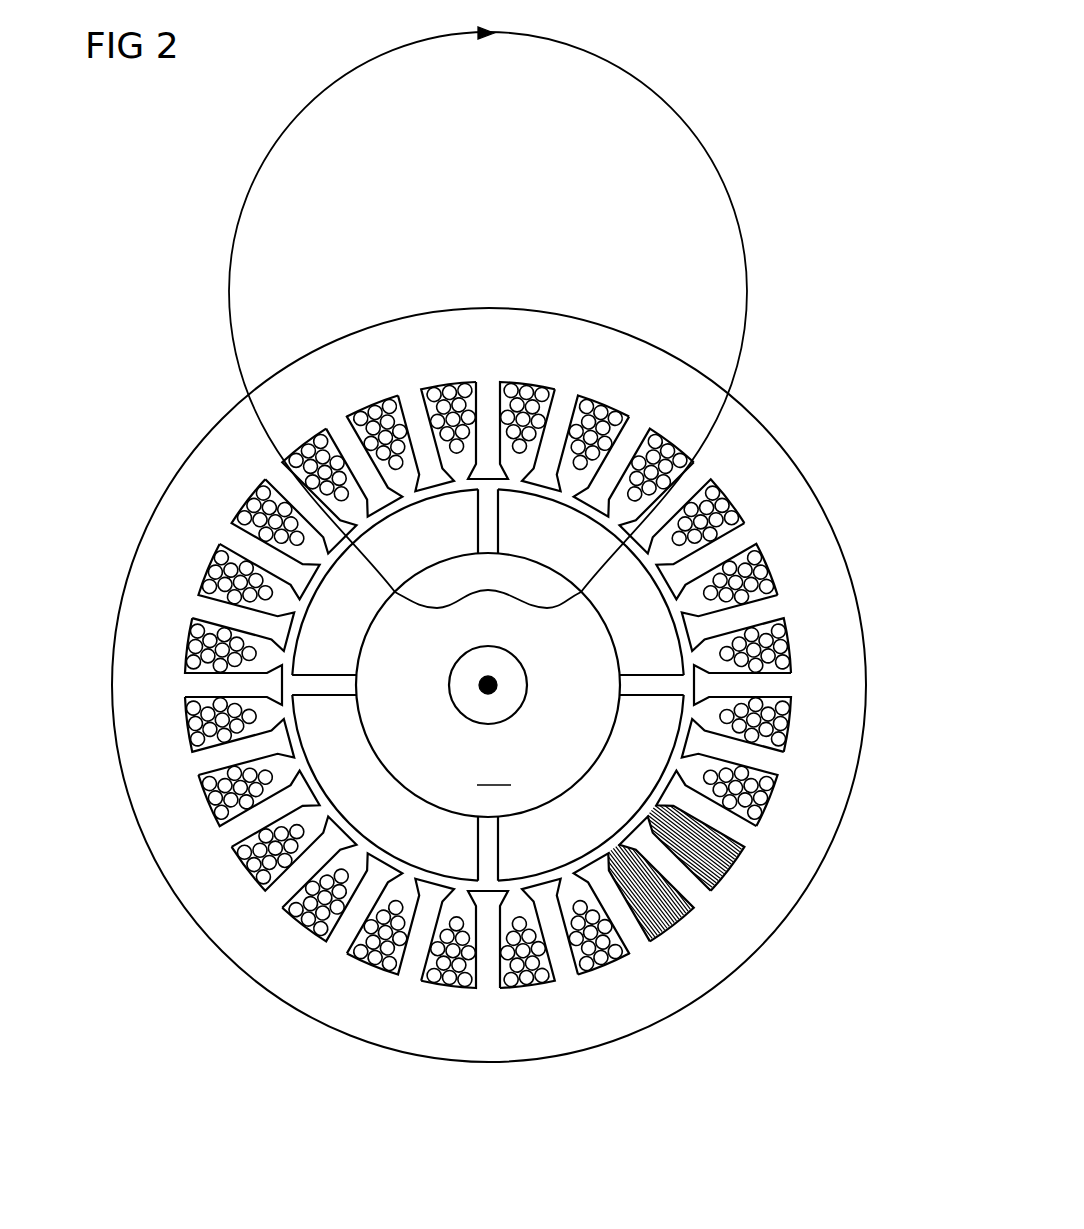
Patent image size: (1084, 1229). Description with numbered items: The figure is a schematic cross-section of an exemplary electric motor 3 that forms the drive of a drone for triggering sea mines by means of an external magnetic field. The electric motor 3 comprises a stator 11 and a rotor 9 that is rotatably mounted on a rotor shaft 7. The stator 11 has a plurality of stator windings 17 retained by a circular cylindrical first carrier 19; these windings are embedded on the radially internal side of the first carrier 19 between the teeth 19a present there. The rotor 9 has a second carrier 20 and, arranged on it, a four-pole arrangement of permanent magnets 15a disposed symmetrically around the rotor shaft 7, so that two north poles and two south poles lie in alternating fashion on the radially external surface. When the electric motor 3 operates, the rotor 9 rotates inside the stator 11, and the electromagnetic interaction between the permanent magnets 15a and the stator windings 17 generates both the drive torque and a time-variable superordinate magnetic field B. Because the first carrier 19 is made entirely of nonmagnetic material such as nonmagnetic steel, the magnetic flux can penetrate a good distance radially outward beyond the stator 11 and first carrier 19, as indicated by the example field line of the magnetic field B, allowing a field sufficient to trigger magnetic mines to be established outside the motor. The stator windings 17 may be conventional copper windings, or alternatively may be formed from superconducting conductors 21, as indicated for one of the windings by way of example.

The electric motor 3 is at (138, 211).
The superordinate magnetic field B is at (543, 47).
The rotor shaft 7 is at (515, 680).
The rotor 9 is at (294, 686).
The stator 11 is at (652, 990).
The permanent magnet 15a is at (422, 830).
The stator winding 17 is at (755, 485).
The first carrier 19 is at (820, 772).
The tooth 19a is at (810, 638).
The second carrier 20 is at (488, 685).
The superconducting conductor 21 is at (745, 886).